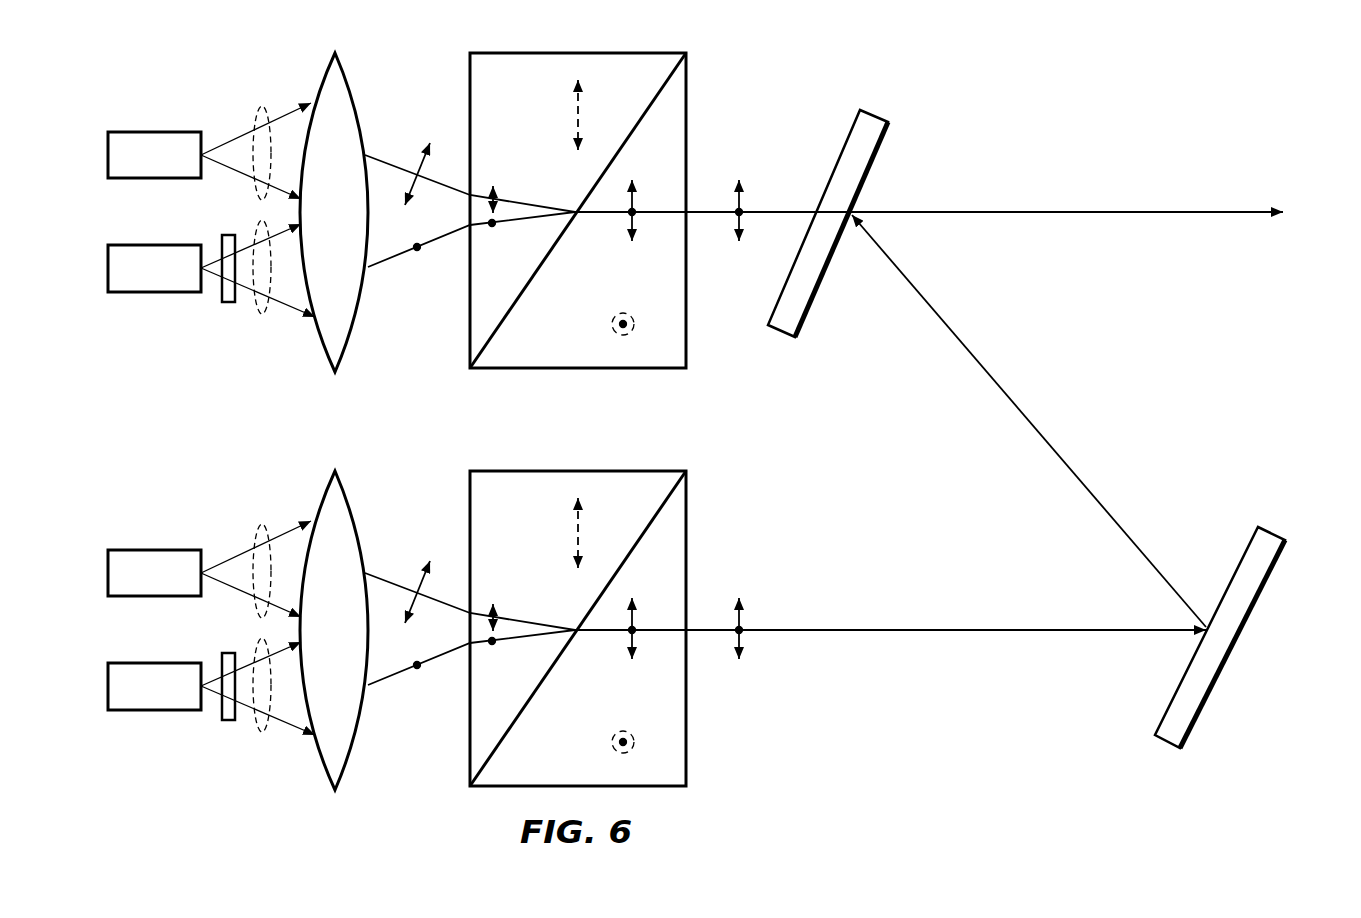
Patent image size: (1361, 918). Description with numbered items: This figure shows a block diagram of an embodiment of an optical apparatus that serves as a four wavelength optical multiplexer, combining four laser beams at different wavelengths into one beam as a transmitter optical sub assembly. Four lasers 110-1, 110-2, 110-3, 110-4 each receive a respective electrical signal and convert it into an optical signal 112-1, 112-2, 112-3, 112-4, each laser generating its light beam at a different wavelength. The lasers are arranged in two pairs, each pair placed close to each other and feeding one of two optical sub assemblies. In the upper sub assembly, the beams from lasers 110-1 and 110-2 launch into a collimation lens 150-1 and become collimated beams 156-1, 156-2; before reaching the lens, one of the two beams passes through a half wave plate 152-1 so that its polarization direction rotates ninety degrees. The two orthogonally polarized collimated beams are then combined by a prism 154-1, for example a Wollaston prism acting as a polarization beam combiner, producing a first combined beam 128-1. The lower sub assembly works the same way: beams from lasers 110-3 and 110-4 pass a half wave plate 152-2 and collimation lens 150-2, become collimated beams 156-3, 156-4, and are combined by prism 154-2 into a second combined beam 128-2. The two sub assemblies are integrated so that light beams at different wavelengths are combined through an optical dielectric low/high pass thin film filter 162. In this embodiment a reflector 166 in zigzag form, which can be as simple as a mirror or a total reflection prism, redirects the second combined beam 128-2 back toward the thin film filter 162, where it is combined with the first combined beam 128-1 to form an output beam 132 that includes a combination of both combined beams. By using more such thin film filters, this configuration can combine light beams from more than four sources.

The laser 110-1 is at (152, 132).
The laser 110-2 is at (143, 293).
The laser 110-3 is at (152, 550).
The laser 110-4 is at (143, 711).
The optical signal 112-1 is at (262, 107).
The optical signal 112-2 is at (262, 221).
The optical signal 112-3 is at (262, 525).
The optical signal 112-4 is at (262, 639).
The collimation lens 150-1 is at (352, 82).
The collimation lens 150-2 is at (352, 500).
The half wave plate 152-1 is at (228, 303).
The half wave plate 152-2 is at (228, 721).
The prism 154-1 is at (687, 120).
The prism 154-2 is at (687, 538).
The collimated beam 156-1 is at (392, 157).
The collimated beam 156-2 is at (393, 260).
The collimated beam 156-3 is at (392, 575).
The collimated beam 156-4 is at (393, 678).
The first combined beam 128-1 is at (790, 211).
The second combined beam 128-2 is at (935, 631).
The output beam 132 is at (1047, 211).
The thin film filter 162 is at (815, 290).
The reflector 166 is at (1210, 700).